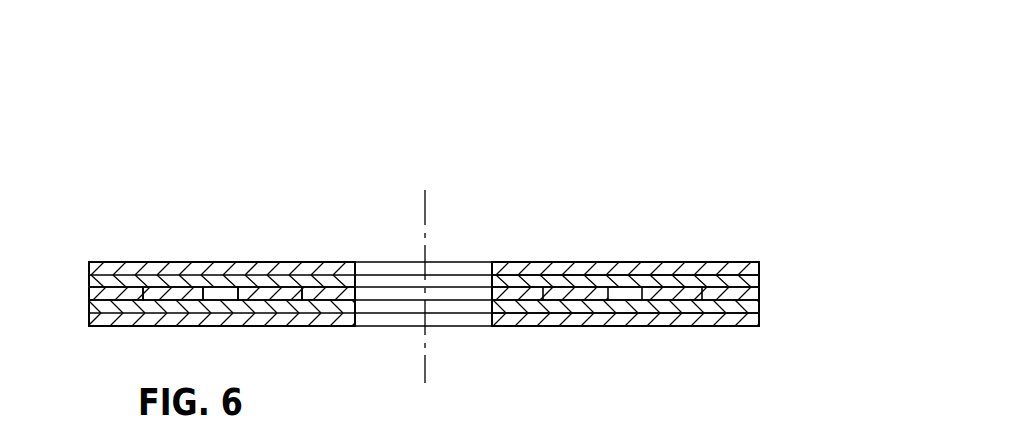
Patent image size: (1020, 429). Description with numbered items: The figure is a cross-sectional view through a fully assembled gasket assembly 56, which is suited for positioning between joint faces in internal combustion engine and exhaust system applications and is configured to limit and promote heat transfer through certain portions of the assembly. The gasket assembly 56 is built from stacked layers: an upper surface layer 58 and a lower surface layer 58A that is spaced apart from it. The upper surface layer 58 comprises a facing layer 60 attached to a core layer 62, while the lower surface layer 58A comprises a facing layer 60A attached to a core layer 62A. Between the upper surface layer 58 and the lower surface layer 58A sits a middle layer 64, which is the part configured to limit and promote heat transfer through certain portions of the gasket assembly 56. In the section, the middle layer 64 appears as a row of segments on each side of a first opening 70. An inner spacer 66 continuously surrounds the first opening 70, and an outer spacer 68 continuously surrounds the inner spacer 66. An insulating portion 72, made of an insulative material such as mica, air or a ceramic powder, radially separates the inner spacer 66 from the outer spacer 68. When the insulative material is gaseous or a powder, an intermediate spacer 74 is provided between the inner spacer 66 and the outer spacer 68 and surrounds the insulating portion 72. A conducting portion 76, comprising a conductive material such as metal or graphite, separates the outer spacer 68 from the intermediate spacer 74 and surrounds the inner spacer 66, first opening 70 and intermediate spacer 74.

The gasket assembly 56 is at (116, 238).
The upper surface layer 58 is at (573, 262).
The lower surface layer 58A is at (588, 326).
The facing layer 60 is at (761, 268).
The core layer 62 is at (761, 281).
The middle layer 64 is at (761, 293).
The core layer 62A is at (761, 306).
The facing layer 60A is at (761, 319).
The inner spacer 66 is at (330, 295).
The outer spacer 68 is at (115, 295).
The first opening 70 is at (383, 293).
The insulating portion 72 is at (272, 295).
The intermediate spacer 74 is at (222, 295).
The conducting portion 76 is at (173, 295).